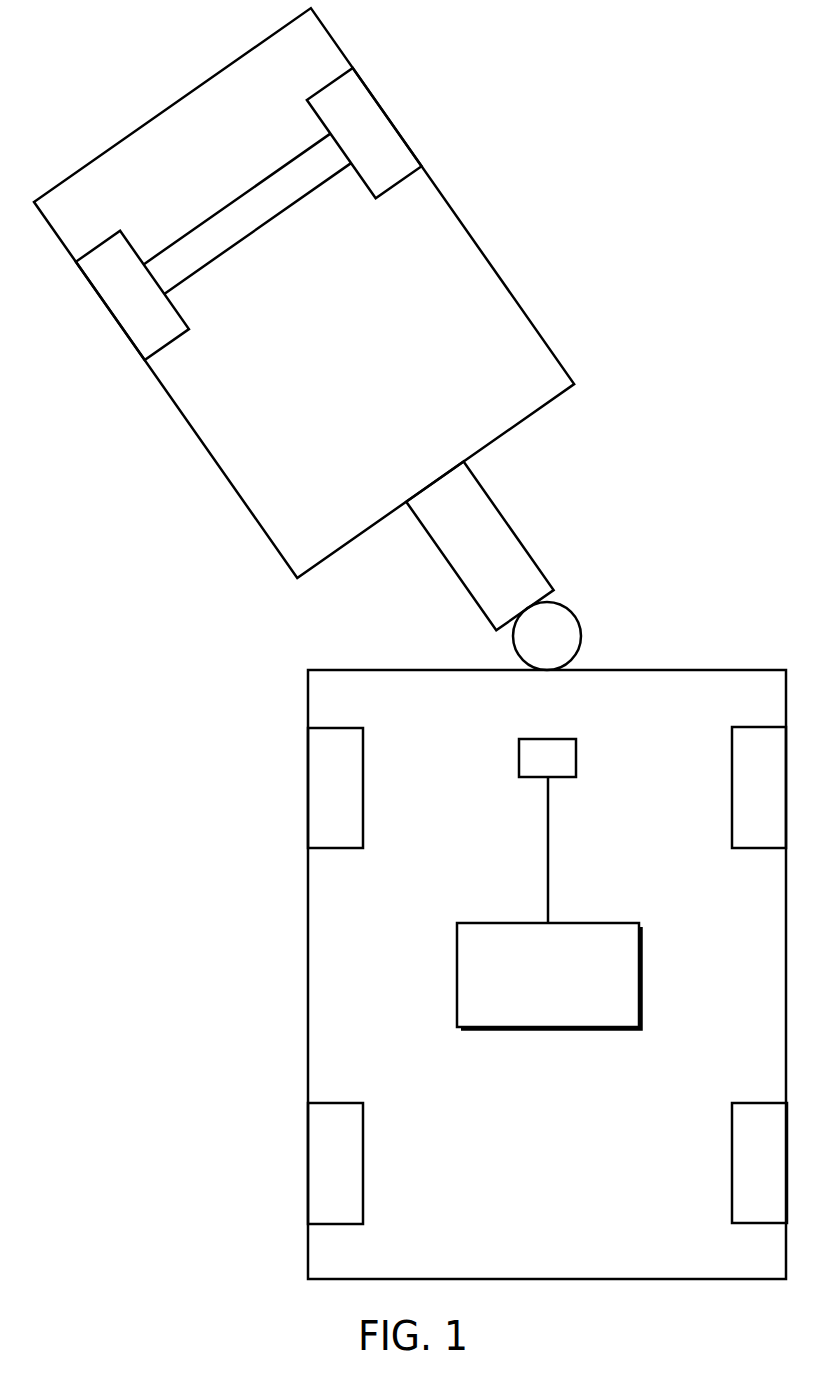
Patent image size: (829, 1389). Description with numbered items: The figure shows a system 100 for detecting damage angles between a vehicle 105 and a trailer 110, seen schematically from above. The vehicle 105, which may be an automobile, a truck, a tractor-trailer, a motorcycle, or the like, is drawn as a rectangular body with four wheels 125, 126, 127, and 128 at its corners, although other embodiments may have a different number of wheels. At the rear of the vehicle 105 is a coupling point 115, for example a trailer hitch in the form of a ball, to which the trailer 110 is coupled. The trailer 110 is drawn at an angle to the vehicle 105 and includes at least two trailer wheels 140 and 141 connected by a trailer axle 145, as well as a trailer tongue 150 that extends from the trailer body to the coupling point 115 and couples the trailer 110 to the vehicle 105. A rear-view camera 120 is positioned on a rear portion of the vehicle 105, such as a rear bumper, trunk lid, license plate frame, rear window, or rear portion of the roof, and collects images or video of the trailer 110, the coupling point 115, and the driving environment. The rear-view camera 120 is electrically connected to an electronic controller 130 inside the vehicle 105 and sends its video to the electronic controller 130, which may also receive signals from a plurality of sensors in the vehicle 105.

The system 100 is at (124, 644).
The vehicle 105 is at (308, 977).
The trailer 110 is at (166, 394).
The coupling point 115 is at (583, 635).
The rear-view camera 120 is at (519, 760).
The wheel 125 is at (308, 789).
The wheel 126 is at (308, 1161).
The wheel 127 is at (732, 1164).
The wheel 128 is at (732, 790).
The electronic controller 130 is at (457, 977).
The trailer wheel 140 is at (110, 312).
The trailer wheel 141 is at (388, 118).
The trailer axle 145 is at (238, 200).
The trailer tongue 150 is at (452, 569).